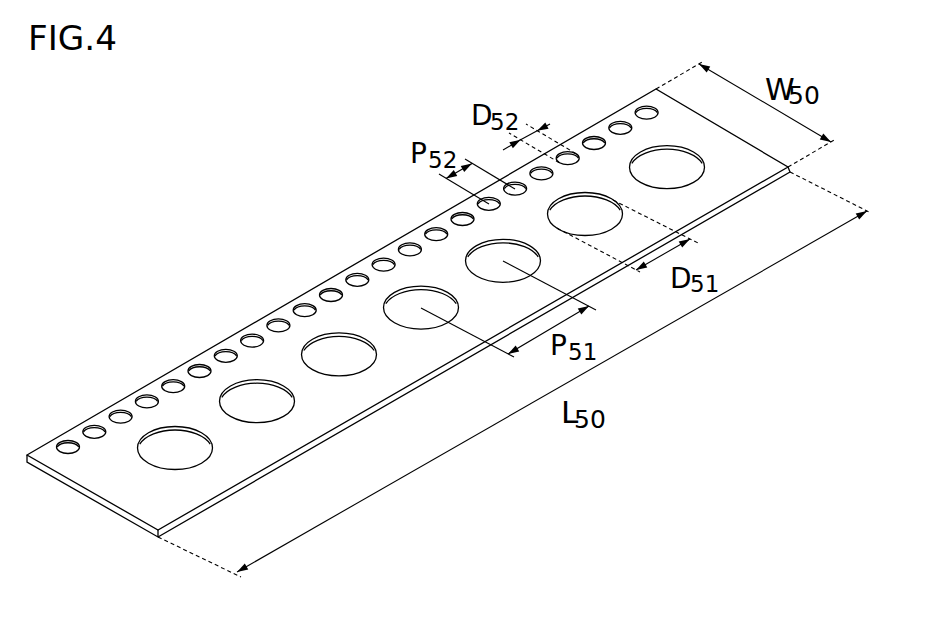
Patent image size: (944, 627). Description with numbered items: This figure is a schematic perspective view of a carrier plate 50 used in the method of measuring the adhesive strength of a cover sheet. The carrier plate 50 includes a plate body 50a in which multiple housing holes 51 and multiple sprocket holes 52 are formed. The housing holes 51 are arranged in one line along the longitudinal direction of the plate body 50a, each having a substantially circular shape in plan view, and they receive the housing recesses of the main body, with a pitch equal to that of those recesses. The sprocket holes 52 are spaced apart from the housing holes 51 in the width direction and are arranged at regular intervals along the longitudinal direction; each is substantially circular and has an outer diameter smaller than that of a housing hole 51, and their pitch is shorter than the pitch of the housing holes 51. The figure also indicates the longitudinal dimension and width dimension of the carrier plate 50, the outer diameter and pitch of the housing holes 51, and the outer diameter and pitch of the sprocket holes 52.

The carrier plate 50 is at (167, 245).
The plate body 50a is at (437, 260).
The housing holes 51 is at (242, 400).
The sprocket holes 52 is at (330, 293).